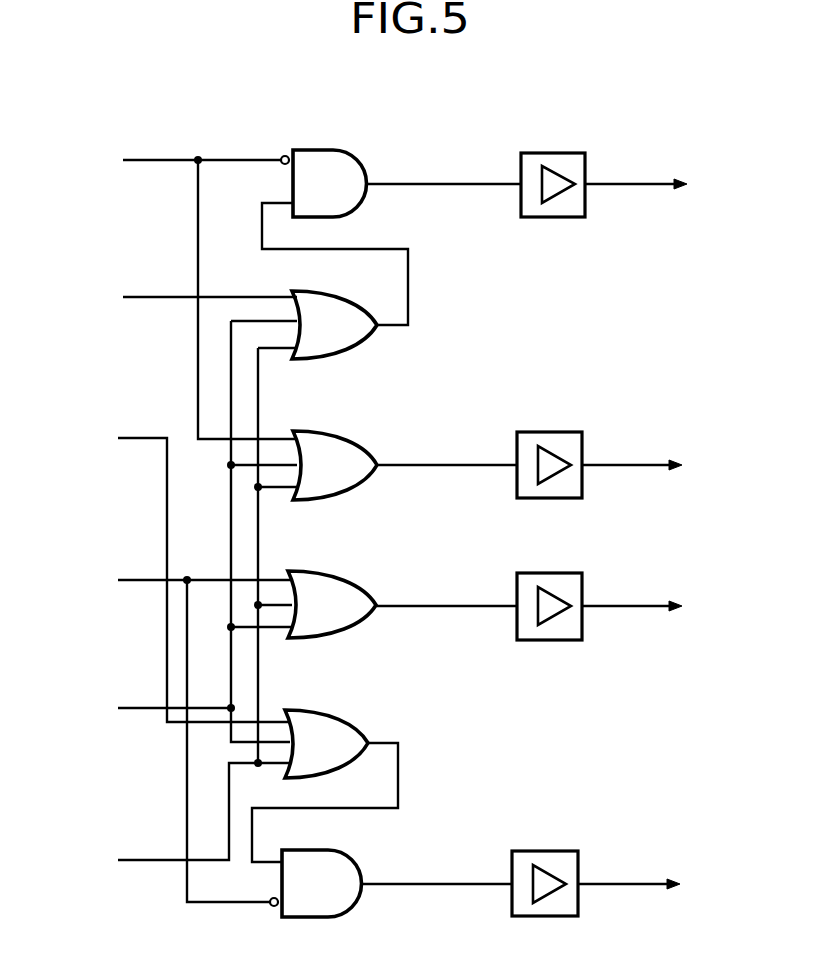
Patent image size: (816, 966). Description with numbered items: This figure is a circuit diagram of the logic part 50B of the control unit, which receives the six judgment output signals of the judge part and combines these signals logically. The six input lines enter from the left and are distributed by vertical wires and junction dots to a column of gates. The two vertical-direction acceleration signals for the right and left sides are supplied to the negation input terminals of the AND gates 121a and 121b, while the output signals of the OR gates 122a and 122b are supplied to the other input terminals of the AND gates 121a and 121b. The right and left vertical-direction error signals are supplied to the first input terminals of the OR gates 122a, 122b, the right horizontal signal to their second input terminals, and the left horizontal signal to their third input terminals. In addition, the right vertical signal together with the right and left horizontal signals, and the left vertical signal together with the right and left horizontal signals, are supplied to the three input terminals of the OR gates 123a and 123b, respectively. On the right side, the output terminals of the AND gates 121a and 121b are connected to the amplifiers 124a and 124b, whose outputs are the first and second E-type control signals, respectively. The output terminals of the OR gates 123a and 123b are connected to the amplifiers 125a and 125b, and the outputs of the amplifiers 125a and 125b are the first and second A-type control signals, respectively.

The logic part 50B is at (606, 120).
The AND gate 121a is at (322, 148).
The AND gate 121b is at (330, 850).
The OR gate 122a is at (368, 343).
The OR gate 122b is at (307, 710).
The OR gate 123a is at (317, 431).
The OR gate 123b is at (310, 571).
The amplifier 124a is at (557, 153).
The amplifier 124b is at (537, 851).
The amplifier 125a is at (533, 432).
The amplifier 125b is at (533, 573).